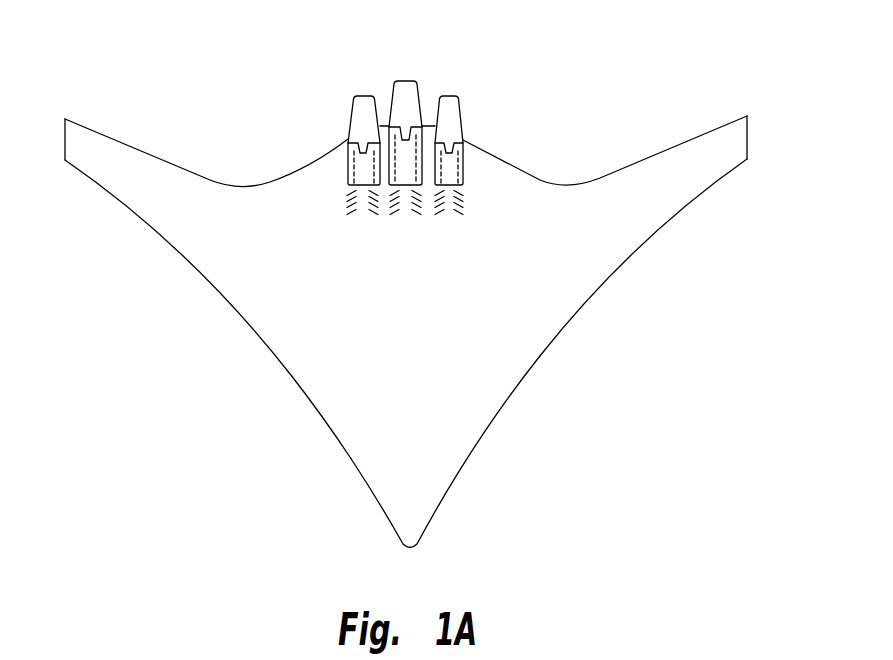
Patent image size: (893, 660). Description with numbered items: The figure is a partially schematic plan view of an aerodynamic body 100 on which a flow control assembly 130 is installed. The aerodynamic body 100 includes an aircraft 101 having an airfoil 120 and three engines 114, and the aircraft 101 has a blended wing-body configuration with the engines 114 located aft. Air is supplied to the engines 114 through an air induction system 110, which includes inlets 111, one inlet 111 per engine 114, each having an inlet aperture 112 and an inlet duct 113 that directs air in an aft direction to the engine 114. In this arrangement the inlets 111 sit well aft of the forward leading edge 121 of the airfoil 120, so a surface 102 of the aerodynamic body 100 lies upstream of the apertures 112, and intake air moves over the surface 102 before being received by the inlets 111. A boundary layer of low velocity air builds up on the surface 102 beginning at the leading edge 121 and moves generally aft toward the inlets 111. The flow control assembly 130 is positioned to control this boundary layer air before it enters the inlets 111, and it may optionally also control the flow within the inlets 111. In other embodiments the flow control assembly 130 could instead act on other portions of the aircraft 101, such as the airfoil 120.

The aerodynamic body 100 is at (185, 333).
The aircraft 101 is at (450, 465).
The surface 102 is at (465, 258).
The air induction system 110 is at (438, 238).
The inlet 111 is at (432, 183).
The inlet aperture 112 is at (463, 188).
The inlet duct 113 is at (450, 152).
The engine 114 is at (351, 116).
The airfoil 120 is at (300, 372).
The forward leading edge 121 is at (347, 452).
The flow control assembly 130 is at (478, 225).